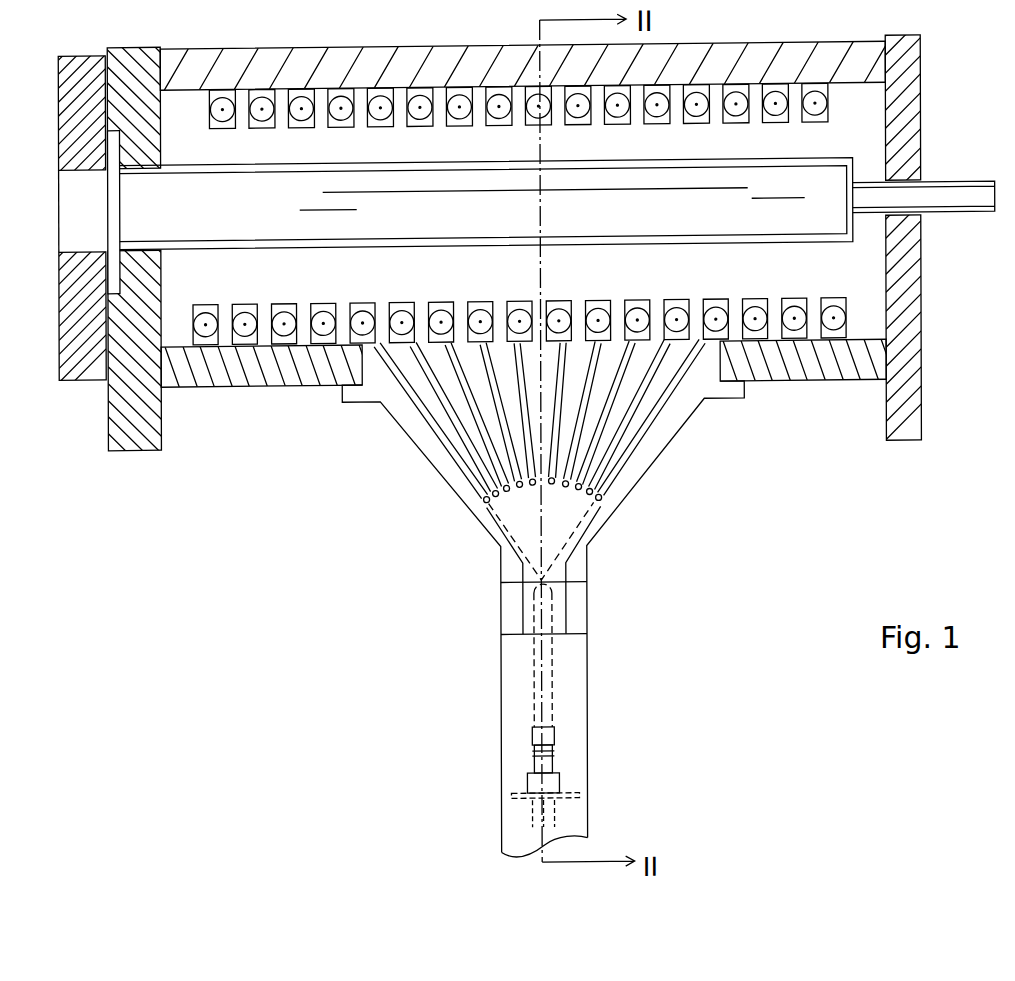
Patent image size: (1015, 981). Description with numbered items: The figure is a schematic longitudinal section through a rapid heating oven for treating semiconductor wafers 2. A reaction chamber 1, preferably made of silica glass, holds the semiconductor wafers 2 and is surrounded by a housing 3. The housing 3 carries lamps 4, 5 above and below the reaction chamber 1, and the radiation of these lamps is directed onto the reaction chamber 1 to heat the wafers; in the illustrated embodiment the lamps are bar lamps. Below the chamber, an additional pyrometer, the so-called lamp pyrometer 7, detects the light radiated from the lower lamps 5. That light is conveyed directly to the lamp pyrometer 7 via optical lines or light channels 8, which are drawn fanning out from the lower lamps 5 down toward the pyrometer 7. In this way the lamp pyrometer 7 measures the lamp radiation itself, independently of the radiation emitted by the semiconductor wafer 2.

The reaction chamber 1 is at (823, 217).
The semiconductor wafer 2 is at (732, 190).
The housing 3 is at (212, 361).
The lamps 4 is at (816, 105).
The lamps 5 is at (838, 316).
The lamp pyrometer 7 is at (540, 678).
The light channels 8 is at (653, 420).